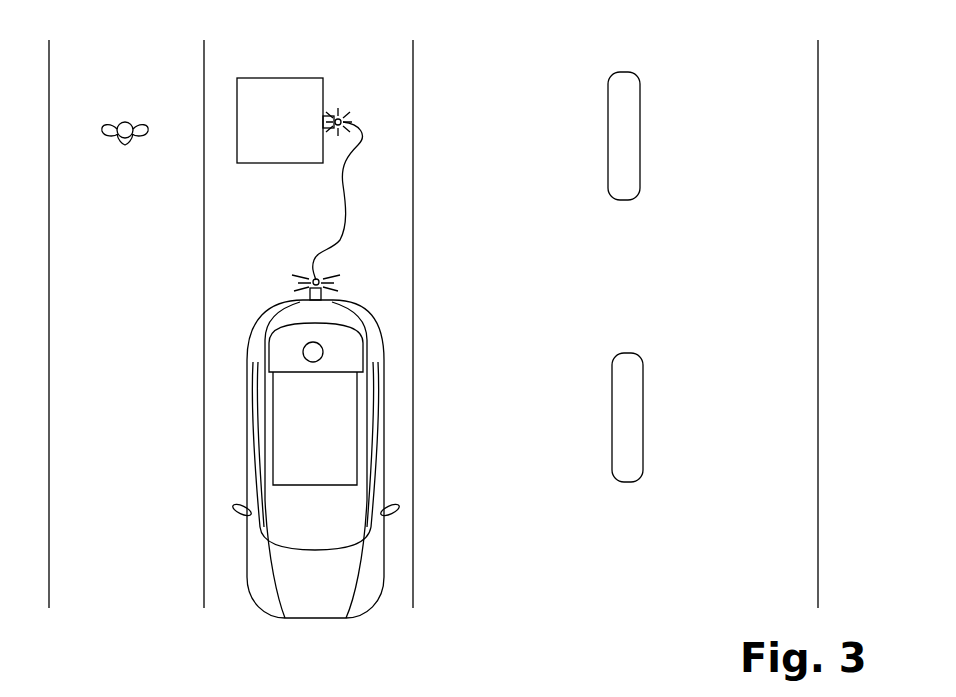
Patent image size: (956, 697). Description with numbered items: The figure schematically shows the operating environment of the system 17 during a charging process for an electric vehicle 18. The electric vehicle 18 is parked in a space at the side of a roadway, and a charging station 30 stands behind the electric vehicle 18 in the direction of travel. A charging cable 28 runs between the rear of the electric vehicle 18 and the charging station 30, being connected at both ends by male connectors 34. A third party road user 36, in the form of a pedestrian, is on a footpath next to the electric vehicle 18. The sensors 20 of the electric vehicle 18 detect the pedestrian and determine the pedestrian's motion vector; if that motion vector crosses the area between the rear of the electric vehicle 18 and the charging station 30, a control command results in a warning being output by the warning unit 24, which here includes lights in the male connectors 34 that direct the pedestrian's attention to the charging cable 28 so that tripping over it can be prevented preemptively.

The system 17 is at (703, 121).
The electric vehicle 18 is at (385, 463).
The sensors 20 is at (324, 353).
The warning unit 24 is at (346, 121).
The charging cable 28 is at (312, 268).
The charging station 30 is at (247, 78).
The male connectors 34 is at (330, 114).
The third party road user 36 is at (118, 124).